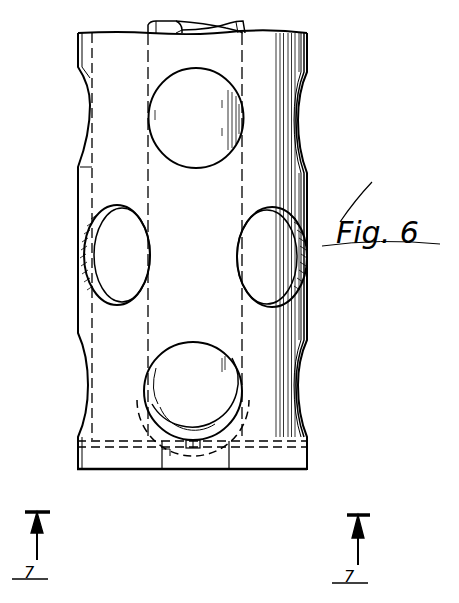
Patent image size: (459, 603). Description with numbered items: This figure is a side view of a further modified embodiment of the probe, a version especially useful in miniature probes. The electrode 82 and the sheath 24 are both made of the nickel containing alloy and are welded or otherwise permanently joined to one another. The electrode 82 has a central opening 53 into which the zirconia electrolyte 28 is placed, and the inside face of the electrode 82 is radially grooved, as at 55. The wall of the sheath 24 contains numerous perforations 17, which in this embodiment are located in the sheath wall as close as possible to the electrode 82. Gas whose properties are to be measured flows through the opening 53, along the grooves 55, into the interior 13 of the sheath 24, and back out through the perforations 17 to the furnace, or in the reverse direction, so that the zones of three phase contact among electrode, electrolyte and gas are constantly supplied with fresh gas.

The interior of the sheath 13 is at (100, 253).
The perforations 17 is at (243, 131).
The sheath 24 is at (268, 323).
The zirconia electrolyte 28 is at (228, 193).
The central opening 53 is at (163, 452).
The radial grooves 55 is at (184, 396).
The electrode 82 is at (270, 462).